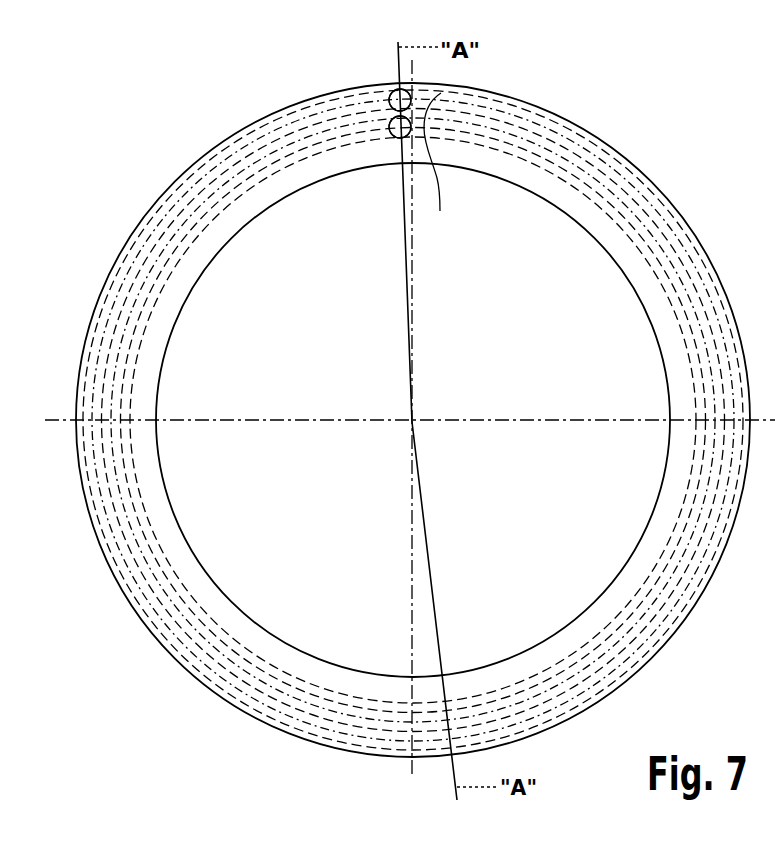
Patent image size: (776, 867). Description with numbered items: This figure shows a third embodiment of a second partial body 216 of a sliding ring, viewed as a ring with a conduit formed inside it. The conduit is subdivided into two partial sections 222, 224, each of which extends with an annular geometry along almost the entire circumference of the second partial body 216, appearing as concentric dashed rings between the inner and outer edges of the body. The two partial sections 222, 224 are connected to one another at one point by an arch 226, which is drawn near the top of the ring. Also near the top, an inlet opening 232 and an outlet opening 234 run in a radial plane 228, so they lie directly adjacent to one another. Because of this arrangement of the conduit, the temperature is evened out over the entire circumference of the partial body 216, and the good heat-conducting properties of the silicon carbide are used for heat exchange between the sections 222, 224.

The second partial body 216 is at (218, 108).
The partial section 222 is at (210, 619).
The partial section 224 is at (640, 653).
The arch 226 is at (439, 172).
The radial plane 228 is at (397, 74).
The inlet opening 232 is at (390, 86).
The outlet opening 234 is at (389, 128).